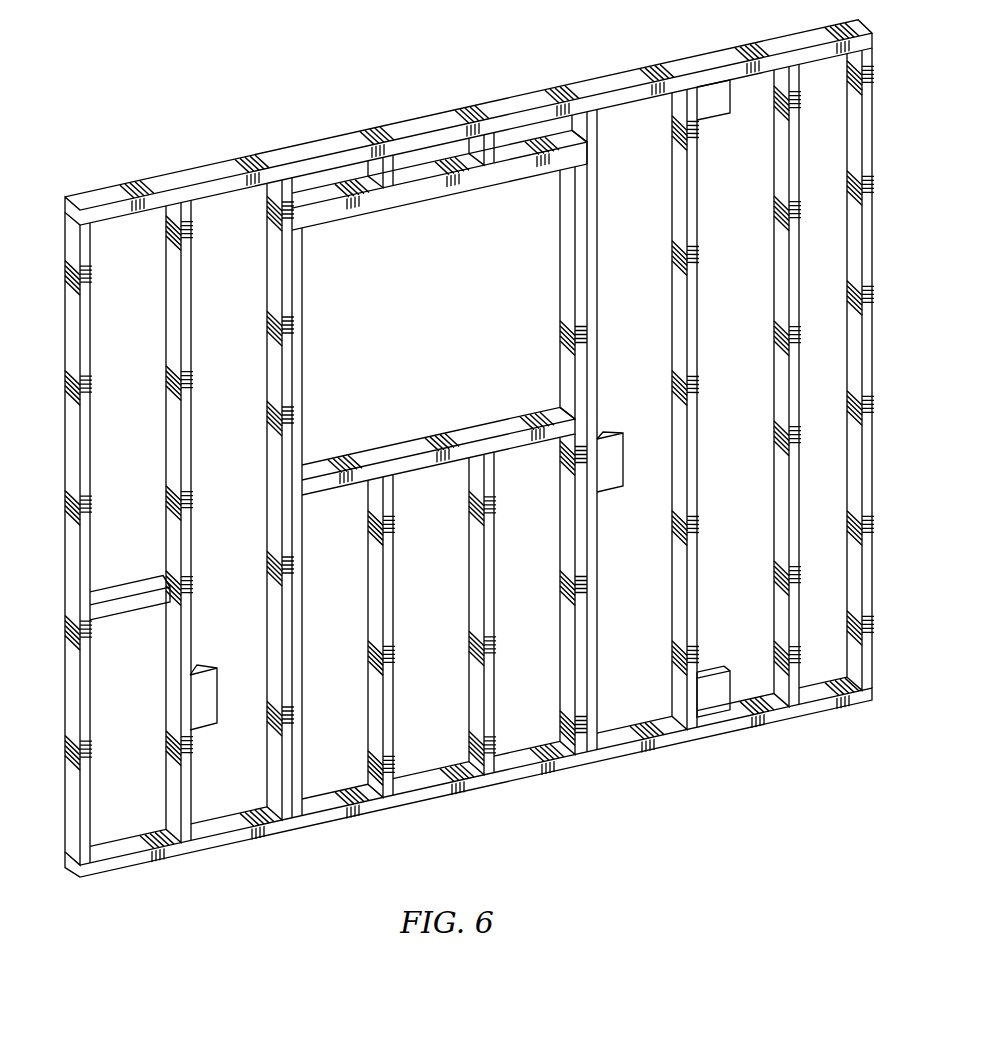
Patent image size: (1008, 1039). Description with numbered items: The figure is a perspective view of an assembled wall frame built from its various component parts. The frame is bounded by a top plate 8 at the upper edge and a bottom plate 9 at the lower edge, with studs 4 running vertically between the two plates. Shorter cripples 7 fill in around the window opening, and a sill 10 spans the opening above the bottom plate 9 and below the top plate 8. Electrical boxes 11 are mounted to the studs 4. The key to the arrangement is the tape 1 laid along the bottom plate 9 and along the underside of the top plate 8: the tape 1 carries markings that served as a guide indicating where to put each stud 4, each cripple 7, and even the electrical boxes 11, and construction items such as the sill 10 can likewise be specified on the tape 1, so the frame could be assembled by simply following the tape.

The tape 1 is at (469, 449).
The stud 4 is at (683, 268).
The cripple 7 is at (490, 153).
The top plate 8 is at (600, 80).
The bottom plate 9 is at (300, 819).
The sill 10 is at (313, 470).
The electrical box 11 is at (722, 684).